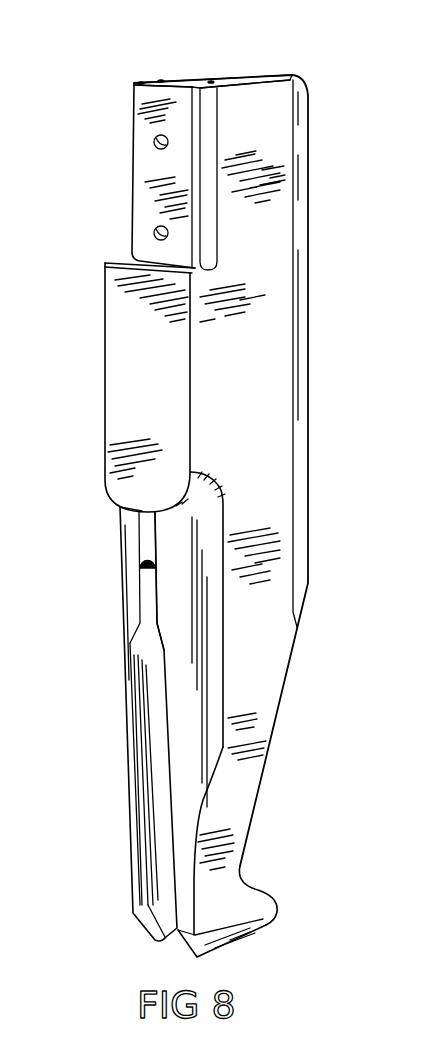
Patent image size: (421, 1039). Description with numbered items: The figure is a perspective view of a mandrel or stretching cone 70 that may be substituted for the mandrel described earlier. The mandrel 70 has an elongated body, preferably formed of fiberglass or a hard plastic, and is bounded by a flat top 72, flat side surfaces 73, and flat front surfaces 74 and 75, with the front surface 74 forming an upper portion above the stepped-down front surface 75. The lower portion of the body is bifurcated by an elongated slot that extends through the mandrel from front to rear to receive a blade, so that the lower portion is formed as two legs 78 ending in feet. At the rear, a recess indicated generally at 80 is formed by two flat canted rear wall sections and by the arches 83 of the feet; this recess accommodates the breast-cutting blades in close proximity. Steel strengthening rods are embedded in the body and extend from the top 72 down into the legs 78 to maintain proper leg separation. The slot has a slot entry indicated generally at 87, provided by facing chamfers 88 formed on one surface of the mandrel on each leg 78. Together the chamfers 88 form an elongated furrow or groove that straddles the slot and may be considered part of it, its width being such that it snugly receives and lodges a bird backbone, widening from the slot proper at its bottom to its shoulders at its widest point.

The mandrel 70 is at (193, 486).
The flat top 72 is at (240, 80).
The flat side surfaces 73 is at (272, 342).
The flat front surface 74 is at (145, 158).
The flat front surface 75 is at (118, 330).
The legs 78 is at (201, 724).
The recess 80 is at (262, 846).
The arches 83 is at (265, 882).
The slot entry 87 is at (144, 704).
The chamfers 88 is at (146, 726).